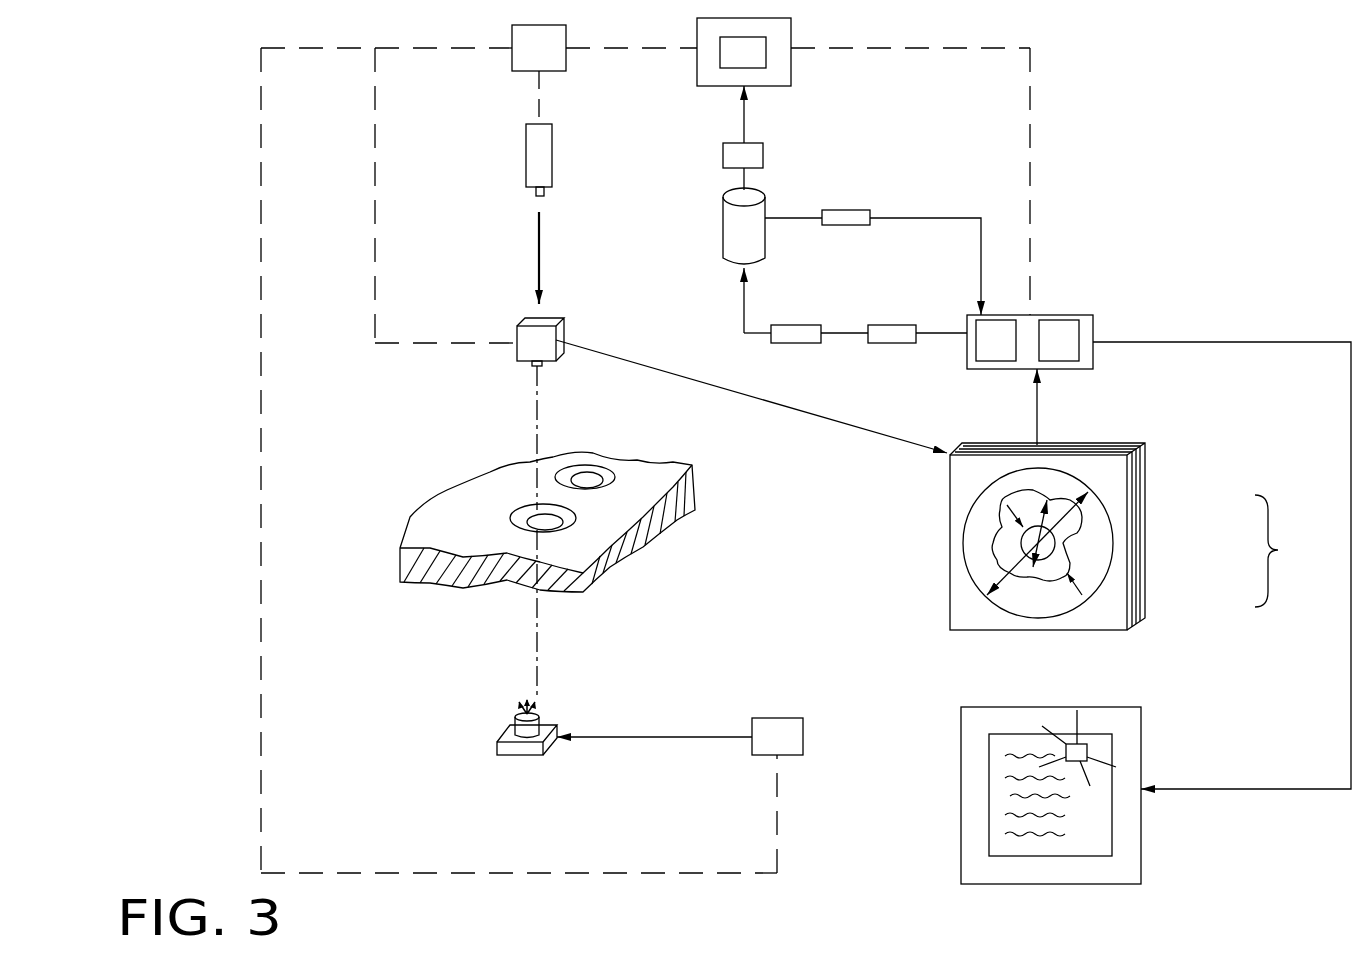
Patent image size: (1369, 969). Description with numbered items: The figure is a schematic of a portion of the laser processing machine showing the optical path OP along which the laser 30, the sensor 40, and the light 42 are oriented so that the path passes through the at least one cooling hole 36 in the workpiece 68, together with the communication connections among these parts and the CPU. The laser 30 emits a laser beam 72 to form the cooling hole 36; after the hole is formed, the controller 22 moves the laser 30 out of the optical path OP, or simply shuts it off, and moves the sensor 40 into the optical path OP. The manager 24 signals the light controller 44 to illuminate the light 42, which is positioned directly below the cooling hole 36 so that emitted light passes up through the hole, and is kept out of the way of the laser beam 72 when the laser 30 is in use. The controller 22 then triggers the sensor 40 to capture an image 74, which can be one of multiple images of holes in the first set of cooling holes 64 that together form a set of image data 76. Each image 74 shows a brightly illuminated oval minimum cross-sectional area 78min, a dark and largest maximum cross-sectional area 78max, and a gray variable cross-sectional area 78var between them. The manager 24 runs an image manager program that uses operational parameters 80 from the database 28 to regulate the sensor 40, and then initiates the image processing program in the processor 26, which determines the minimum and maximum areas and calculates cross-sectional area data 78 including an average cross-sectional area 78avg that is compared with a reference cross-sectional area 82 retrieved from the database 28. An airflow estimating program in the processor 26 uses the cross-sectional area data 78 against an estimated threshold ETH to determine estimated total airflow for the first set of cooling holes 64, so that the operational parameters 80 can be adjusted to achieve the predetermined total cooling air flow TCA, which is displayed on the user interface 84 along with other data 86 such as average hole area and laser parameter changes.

The controller 22 is at (566, 62).
The manager 24 is at (791, 63).
The processor 26 is at (1085, 315).
The database 28 is at (742, 234).
The laser 30 is at (552, 155).
The cooling hole 36 is at (570, 516).
The sensor 40 is at (550, 318).
The light 42 is at (523, 748).
The light controller 44 is at (795, 750).
The first set of cooling holes 64 is at (568, 470).
The workpiece 68 is at (466, 537).
The laser beam 72 is at (536, 242).
The image 74 is at (1127, 455).
The set of image data 76 is at (968, 445).
The cross-sectional area data 78 is at (1278, 550).
The maximum cross-sectional area 78max is at (1080, 527).
The variable cross-sectional area 78var is at (1056, 543).
The minimum cross-sectional area 78min is at (1070, 580).
The average cross-sectional area 78avg is at (790, 302).
The operational parameters 80 is at (763, 156).
The reference cross-sectional area 82 is at (847, 213).
The user interface 84 is at (997, 707).
The other data 86 is at (1027, 810).
The optical path OP is at (537, 655).
The threshold ETH is at (892, 325).
The total cooling air flow TCA is at (1087, 750).